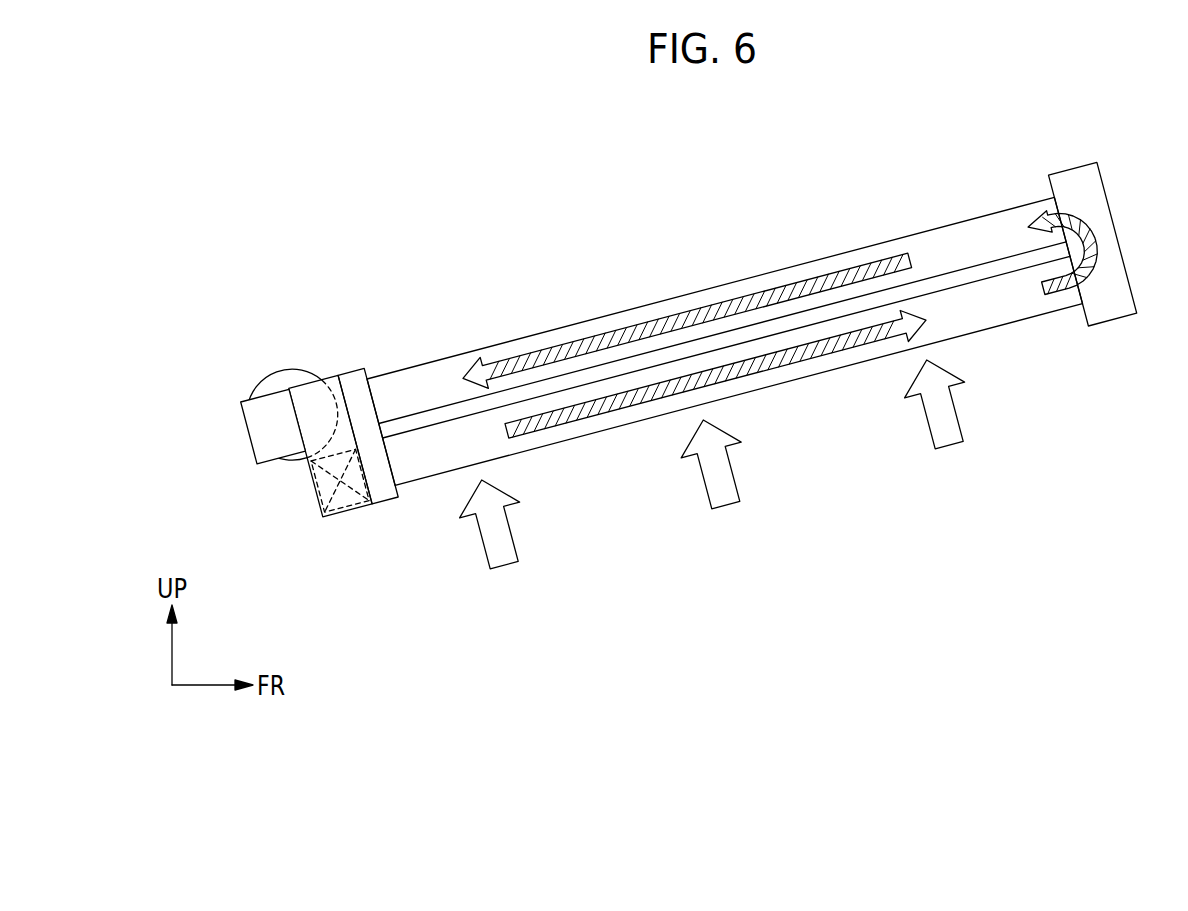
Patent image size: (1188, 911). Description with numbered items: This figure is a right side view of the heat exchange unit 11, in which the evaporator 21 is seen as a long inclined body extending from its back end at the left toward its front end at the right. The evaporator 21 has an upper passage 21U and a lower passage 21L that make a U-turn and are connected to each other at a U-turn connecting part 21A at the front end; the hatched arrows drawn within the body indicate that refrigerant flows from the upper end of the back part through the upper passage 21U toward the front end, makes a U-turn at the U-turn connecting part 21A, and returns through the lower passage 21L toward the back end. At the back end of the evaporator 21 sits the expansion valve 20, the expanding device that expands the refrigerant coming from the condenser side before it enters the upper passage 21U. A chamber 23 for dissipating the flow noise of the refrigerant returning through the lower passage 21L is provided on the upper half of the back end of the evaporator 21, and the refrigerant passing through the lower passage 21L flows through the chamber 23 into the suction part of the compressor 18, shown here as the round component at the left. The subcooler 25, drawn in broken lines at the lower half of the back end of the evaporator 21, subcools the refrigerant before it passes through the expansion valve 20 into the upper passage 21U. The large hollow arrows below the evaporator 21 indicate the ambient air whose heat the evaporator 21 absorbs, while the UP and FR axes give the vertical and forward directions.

The heat exchange unit 11 is at (887, 190).
The evaporator 21 is at (790, 256).
The upper passage 21U is at (448, 370).
The lower passage 21L is at (990, 317).
The U-turn connecting part 21A is at (1090, 178).
The expansion valve 20 is at (323, 392).
The subcooler 25 is at (360, 506).
The compressor 18 is at (243, 376).
The chamber 23 is at (283, 443).